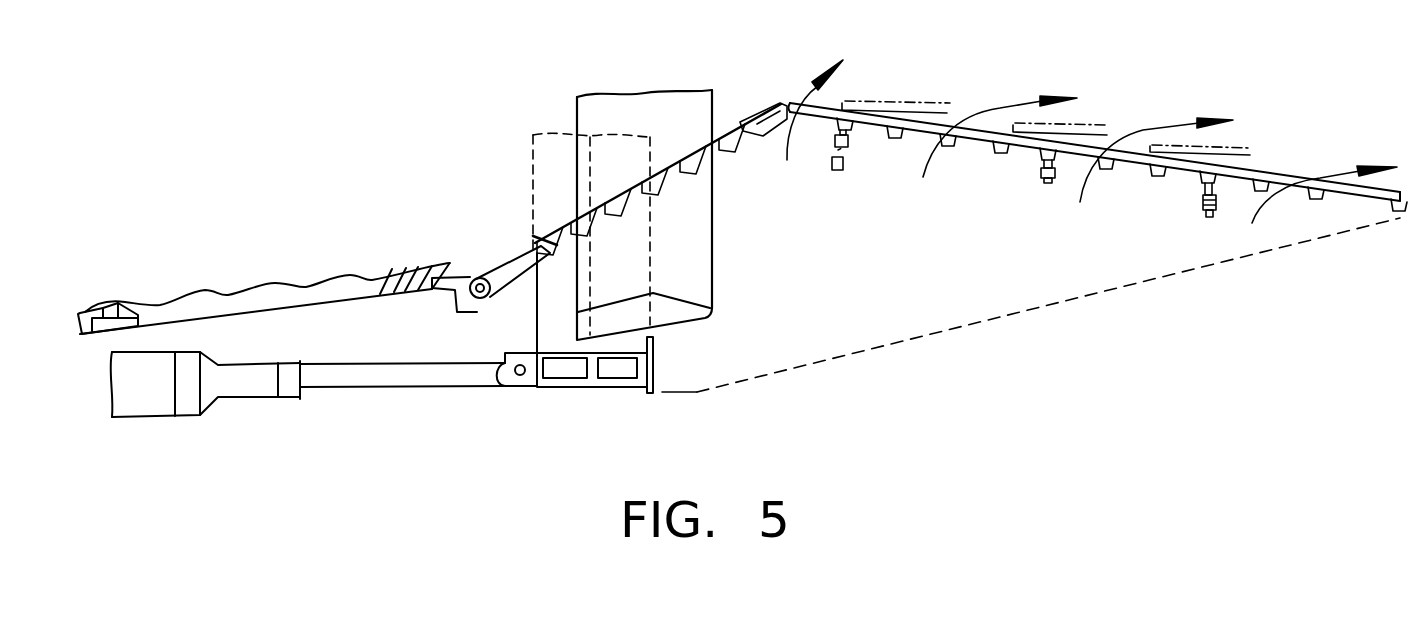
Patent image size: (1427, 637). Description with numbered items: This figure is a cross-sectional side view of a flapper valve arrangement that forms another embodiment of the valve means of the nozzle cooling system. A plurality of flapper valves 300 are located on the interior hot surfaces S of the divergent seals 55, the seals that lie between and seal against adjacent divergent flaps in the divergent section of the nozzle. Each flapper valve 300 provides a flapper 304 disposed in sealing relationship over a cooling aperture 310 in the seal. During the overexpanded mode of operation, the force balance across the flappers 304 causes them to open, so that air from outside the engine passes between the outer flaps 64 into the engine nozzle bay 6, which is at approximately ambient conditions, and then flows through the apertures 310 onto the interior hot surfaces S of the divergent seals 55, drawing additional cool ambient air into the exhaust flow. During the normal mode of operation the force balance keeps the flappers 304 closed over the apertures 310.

The interior hot surfaces S is at (827, 105).
The flapper valves 300 is at (907, 86).
The flappers 304 is at (957, 112).
The cooling apertures 310 is at (883, 120).
The divergent seals 55 is at (1287, 175).
The outer flaps 64 is at (878, 348).
The engine nozzle bay 6 is at (932, 249).